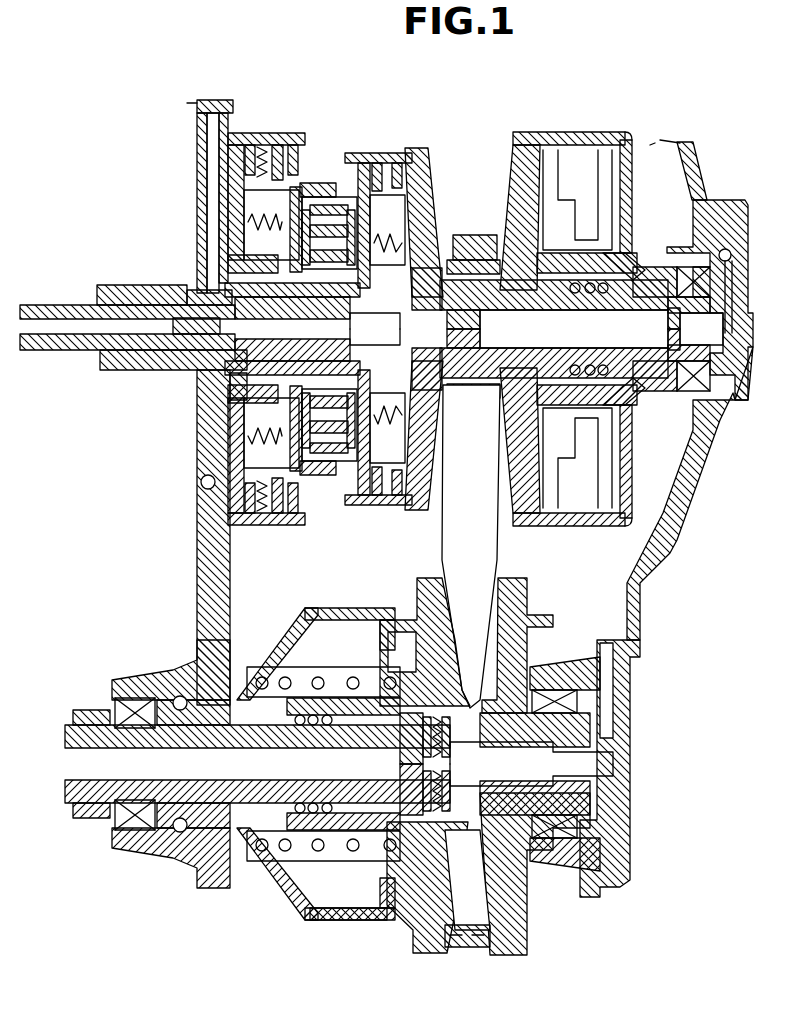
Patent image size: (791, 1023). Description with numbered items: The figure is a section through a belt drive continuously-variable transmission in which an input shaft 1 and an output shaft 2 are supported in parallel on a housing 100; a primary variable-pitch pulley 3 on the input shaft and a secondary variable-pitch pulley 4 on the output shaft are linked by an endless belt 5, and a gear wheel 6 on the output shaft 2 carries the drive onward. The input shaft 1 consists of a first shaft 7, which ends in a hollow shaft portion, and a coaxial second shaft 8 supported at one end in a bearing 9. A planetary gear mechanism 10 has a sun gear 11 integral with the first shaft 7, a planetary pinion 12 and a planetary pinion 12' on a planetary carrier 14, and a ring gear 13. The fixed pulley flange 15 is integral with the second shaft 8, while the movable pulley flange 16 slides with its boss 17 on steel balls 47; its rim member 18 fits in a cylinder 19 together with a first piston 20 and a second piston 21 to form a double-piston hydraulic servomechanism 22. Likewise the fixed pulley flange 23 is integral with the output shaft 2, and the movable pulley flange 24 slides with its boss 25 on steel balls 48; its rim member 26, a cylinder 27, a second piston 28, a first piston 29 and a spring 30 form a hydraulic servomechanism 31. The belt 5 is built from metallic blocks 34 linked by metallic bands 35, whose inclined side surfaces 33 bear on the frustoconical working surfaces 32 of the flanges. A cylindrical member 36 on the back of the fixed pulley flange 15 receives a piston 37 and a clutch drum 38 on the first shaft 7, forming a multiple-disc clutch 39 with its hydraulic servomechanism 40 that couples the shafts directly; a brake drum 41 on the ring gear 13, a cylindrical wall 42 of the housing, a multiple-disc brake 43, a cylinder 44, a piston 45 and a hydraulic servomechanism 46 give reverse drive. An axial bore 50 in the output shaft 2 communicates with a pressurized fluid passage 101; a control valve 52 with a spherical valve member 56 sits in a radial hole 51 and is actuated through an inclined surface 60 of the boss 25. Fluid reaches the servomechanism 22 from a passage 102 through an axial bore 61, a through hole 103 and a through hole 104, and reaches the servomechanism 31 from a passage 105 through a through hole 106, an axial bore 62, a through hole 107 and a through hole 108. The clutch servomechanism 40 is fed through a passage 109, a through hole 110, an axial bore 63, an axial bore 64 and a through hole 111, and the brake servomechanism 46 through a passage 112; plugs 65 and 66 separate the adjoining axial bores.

The input shaft 1 is at (467, 388).
The output shaft 2 is at (580, 740).
The primary variable-pitch pulley 3 is at (490, 138).
The secondary variable-pitch pulley 4 is at (500, 960).
The endless belt 5 is at (485, 540).
The gear wheel 6 is at (95, 815).
The first shaft 7 is at (80, 345).
The second shaft 8 is at (712, 378).
The bearing 9 is at (310, 304).
The planetary gear mechanism 10 is at (323, 97).
The sun gear 11 is at (384, 295).
The planetary pinion 12 is at (334, 155).
The planetary pinion 12' is at (357, 519).
The ring gear 13 is at (310, 183).
The planetary carrier 14 is at (362, 165).
The fixed pulley flange 15 is at (410, 150).
The movable pulley flange 16 is at (530, 140).
The boss 17 is at (640, 258).
The rim member 18 is at (568, 525).
The cylinder 19 is at (615, 135).
The first piston 20 is at (570, 160).
The second piston 21 is at (622, 485).
The double-piston hydraulic servomechanism 22 is at (642, 128).
The fixed pulley flange 23 is at (520, 945).
The movable pulley flange 24 is at (430, 950).
The boss 25 is at (300, 648).
The rim member 26 is at (402, 910).
The cylinder 27 is at (348, 918).
The second piston 28 is at (325, 905).
The first piston 29 is at (300, 885).
The spring 30 is at (325, 625).
The hydraulic servomechanism 31 is at (318, 938).
The frustoconical working surfaces 32 is at (432, 185).
The inclined side surfaces 33 is at (445, 960).
The metallic blocks 34 is at (480, 235).
The metallic bands 35 is at (472, 960).
The cylindrical member 36 is at (408, 515).
The piston 37 is at (412, 200).
The clutch drum 38 is at (420, 222).
The multiple-disc clutch 39 is at (392, 500).
The hydraulic servomechanism 40 is at (398, 495).
The brake drum 41 is at (250, 200).
The cylindrical wall 42 is at (258, 140).
The multiple-disc brake 43 is at (280, 140).
The cylinder 44 is at (232, 492).
The piston 45 is at (228, 455).
The hydraulic servomechanism 46 is at (228, 420).
The steel balls 47 is at (602, 327).
The steel balls 48 is at (289, 767).
The axial bore 50 is at (502, 827).
The radial hole 51 is at (462, 705).
The control valve 52 is at (455, 748).
The spherical valve member 56 is at (450, 768).
The inclined surface 60 is at (470, 700).
The axial bore 61 is at (650, 395).
The axial bore 62 is at (112, 766).
The axial bore 63 is at (63, 320).
The axial bore 64 is at (382, 336).
The plug 65 is at (434, 284).
The plug 66 is at (426, 832).
The housing 100 is at (218, 100).
The pressurized fluid passage 101 is at (618, 690).
The passage 102 is at (722, 256).
The through hole 103 is at (519, 337).
The through hole 104 is at (524, 250).
The passage 105 is at (180, 700).
The through hole 106 is at (217, 767).
The through hole 107 is at (346, 767).
The through hole 108 is at (436, 689).
The passage 109 is at (212, 150).
The through hole 110 is at (175, 300).
The through hole 111 is at (416, 325).
The passage 112 is at (203, 480).